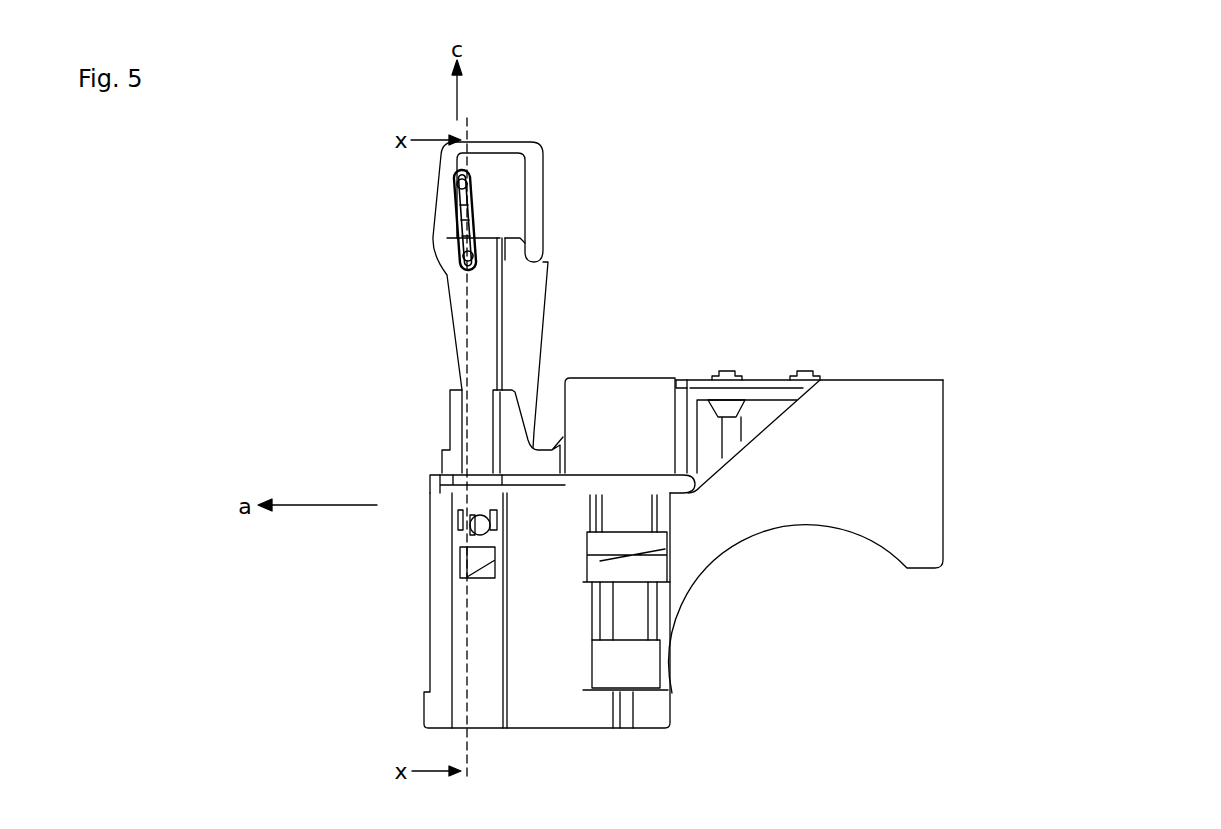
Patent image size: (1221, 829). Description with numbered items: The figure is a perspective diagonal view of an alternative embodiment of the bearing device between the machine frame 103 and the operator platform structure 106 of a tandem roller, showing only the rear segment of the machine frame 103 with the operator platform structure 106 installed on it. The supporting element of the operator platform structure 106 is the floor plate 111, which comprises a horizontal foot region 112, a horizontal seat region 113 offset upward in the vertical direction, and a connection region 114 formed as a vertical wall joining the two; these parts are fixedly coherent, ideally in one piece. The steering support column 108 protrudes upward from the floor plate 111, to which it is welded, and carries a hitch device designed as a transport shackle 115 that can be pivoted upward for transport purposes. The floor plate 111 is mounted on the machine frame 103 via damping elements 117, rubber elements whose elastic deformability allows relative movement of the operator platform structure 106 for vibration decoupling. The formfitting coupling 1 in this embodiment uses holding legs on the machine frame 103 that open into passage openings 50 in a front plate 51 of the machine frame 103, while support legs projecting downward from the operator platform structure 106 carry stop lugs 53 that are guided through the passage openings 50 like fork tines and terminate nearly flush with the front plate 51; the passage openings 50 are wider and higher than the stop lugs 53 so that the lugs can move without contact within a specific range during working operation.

The formfitting coupling 1 is at (389, 531).
The passage opening 50 is at (470, 525).
The front plate 51 is at (490, 700).
The stop lug 53 is at (490, 511).
The machine frame 103 is at (875, 502).
The operator platform structure 106 is at (696, 380).
The steering support column 108 is at (447, 305).
The floor plate 111 is at (653, 378).
The foot region 112 is at (617, 475).
The seat region 113 is at (773, 383).
The connection region 114 is at (583, 422).
The transport shackle 115 is at (460, 183).
The damping elements 117 is at (812, 370).